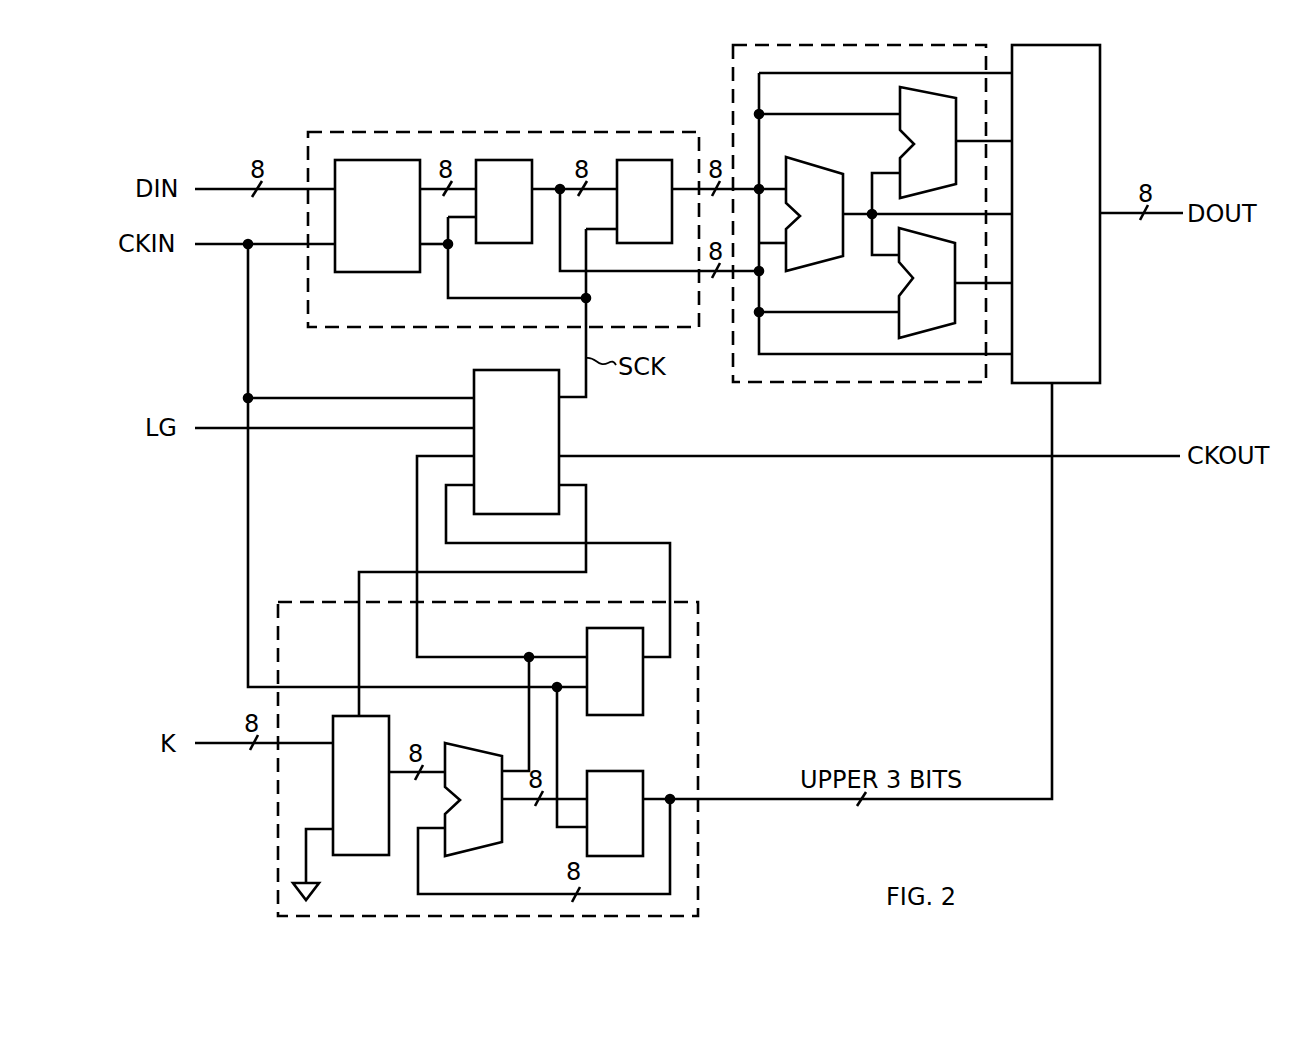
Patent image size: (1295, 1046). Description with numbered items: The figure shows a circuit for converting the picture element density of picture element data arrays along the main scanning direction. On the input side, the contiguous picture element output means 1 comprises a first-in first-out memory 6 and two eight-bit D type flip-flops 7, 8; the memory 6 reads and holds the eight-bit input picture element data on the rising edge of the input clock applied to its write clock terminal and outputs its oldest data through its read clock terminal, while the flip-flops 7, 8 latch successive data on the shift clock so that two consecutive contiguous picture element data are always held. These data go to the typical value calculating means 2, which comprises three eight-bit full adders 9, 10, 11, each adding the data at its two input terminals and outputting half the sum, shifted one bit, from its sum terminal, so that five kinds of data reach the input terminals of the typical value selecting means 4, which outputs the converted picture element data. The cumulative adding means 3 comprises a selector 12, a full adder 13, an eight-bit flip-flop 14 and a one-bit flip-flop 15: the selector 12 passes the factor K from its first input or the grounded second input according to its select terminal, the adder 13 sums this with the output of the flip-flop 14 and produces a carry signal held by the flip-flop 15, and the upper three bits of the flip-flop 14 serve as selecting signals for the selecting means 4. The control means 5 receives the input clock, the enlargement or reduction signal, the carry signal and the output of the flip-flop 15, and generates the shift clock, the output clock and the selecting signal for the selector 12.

The contiguous picture element output means 1 is at (585, 132).
The typical value calculating means 2 is at (733, 72).
The cumulative adding means 3 is at (698, 625).
The typical value selecting means 4 is at (1100, 95).
The control means 5 is at (473, 384).
The first-in first-out memory 6 is at (372, 272).
The eight bit D type flip-flop 7 is at (503, 243).
The eight bit D type flip-flop 8 is at (641, 243).
The full adder 9 is at (833, 167).
The full adder 10 is at (900, 100).
The full adder 11 is at (898, 298).
The selector 12 is at (389, 727).
The full adder 13 is at (480, 848).
The eight bit D type flip-flop 14 is at (643, 780).
The one bit D type flip-flop 15 is at (645, 690).